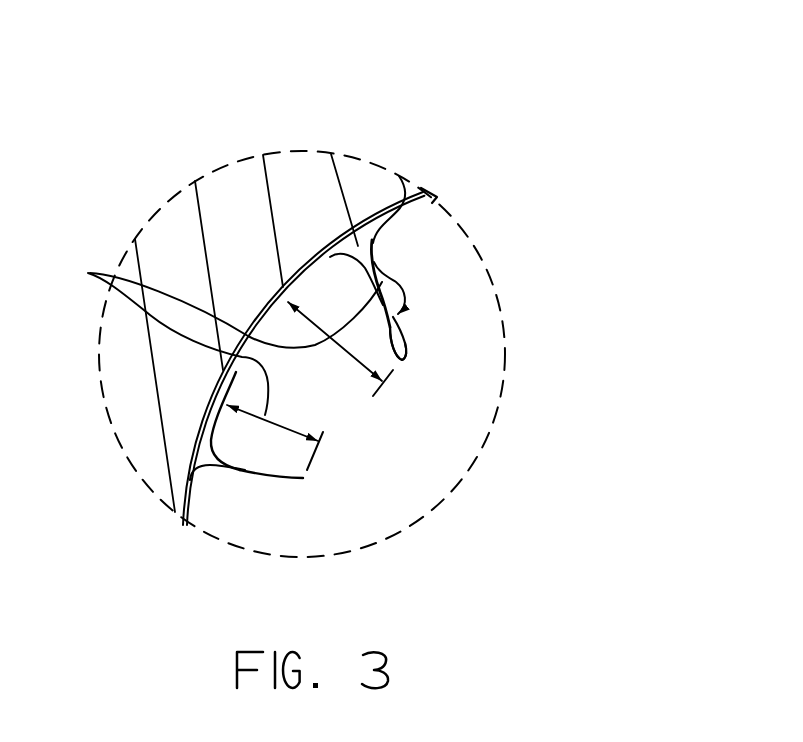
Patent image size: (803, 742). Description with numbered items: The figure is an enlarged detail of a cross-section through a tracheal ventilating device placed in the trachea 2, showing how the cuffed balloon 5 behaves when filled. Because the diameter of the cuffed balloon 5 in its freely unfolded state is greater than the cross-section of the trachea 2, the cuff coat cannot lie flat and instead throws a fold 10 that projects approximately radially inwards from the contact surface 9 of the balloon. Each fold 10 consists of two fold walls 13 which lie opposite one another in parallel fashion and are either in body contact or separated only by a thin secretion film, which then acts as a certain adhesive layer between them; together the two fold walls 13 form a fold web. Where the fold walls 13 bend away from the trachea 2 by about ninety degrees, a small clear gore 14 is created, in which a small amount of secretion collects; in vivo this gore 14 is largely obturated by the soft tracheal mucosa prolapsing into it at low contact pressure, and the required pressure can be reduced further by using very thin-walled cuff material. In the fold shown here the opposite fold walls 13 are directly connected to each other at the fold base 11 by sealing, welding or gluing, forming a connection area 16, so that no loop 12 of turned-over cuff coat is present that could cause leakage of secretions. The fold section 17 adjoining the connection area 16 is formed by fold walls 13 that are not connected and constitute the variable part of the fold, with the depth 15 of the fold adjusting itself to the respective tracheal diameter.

The trachea 2 is at (175, 238).
The cuffed balloon 5 is at (457, 293).
The contact surface 9 is at (367, 213).
The fold 10 is at (423, 375).
The fold base 11 is at (410, 345).
The loop 12 is at (491, 470).
The fold wall 13 is at (372, 240).
The gore 14 is at (355, 235).
The depth of the fold 15 is at (90, 273).
The connection area 16 is at (293, 480).
The fold section 17 is at (236, 492).